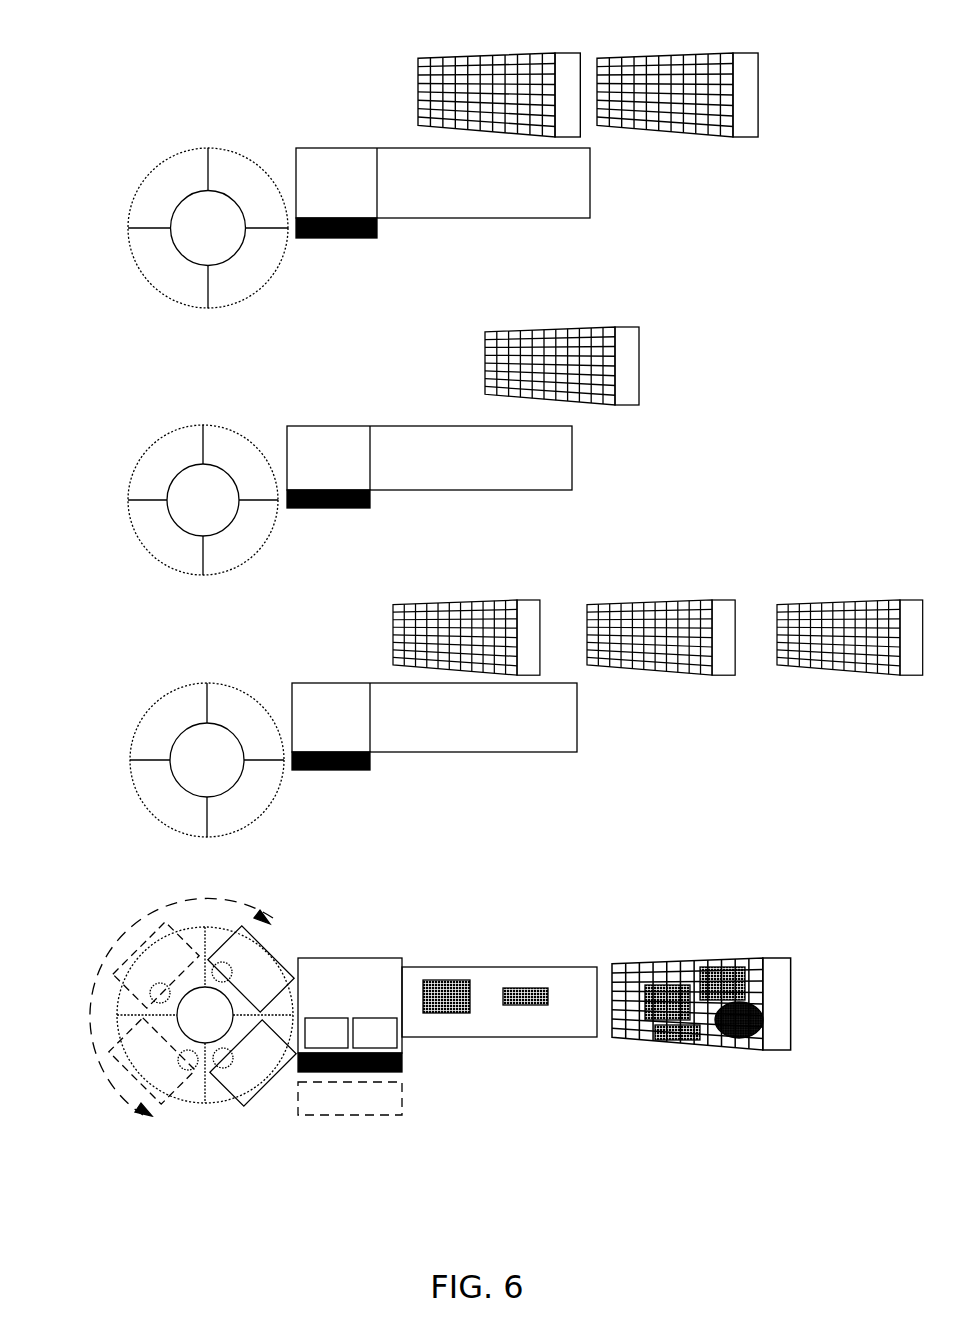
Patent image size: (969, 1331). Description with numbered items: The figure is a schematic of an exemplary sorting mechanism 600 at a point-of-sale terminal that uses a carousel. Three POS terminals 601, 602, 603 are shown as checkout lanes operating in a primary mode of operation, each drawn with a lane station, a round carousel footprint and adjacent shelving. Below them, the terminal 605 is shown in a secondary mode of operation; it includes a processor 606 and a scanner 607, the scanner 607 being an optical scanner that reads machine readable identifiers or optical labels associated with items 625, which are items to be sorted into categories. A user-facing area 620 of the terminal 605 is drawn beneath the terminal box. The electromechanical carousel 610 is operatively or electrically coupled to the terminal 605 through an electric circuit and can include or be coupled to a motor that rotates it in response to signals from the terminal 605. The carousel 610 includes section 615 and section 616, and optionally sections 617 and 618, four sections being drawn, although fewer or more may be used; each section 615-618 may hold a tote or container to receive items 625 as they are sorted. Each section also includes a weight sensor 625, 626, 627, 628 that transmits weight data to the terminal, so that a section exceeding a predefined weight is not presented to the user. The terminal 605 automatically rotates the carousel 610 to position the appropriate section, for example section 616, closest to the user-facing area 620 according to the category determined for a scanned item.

The retail environment with checkout lanes 600 is at (176, 48).
The POS terminal 601 is at (658, 197).
The POS terminal 602 is at (641, 469).
The POS terminal 603 is at (640, 730).
The POS terminal 605 is at (350, 1015).
The processor 606 is at (326, 1033).
The scanner 607 is at (375, 1033).
The carousel 610 is at (398, 1054).
The section 615 is at (268, 953).
The section 616 is at (238, 1097).
The section 617 is at (138, 1080).
The section 618 is at (147, 940).
The user-facing area 620 is at (350, 1098).
The items 625 is at (222, 962).
The weight sensor 626 is at (160, 993).
The weight sensor 627 is at (190, 1070).
The weight sensor 628 is at (223, 1068).